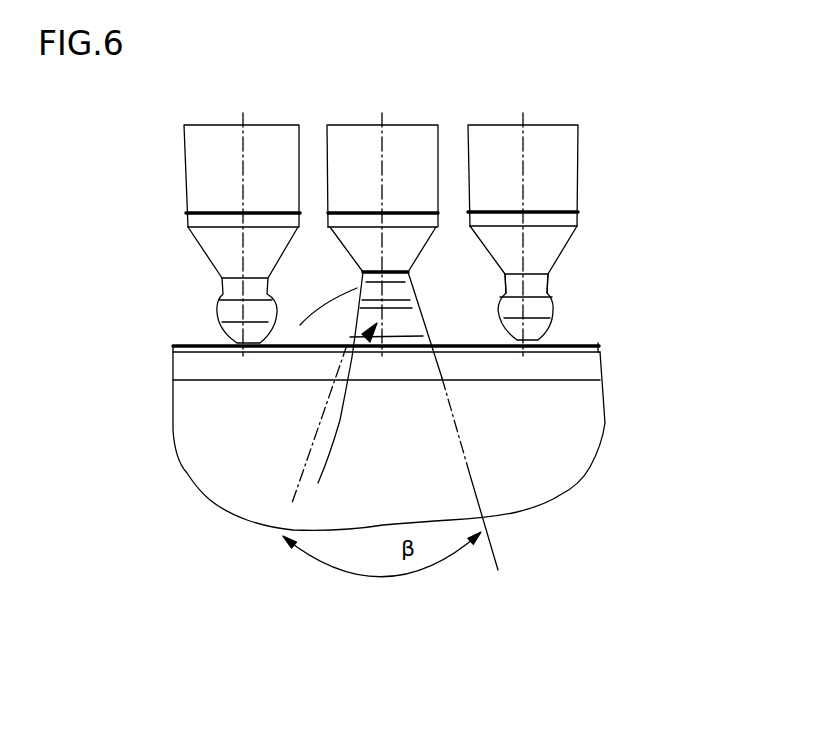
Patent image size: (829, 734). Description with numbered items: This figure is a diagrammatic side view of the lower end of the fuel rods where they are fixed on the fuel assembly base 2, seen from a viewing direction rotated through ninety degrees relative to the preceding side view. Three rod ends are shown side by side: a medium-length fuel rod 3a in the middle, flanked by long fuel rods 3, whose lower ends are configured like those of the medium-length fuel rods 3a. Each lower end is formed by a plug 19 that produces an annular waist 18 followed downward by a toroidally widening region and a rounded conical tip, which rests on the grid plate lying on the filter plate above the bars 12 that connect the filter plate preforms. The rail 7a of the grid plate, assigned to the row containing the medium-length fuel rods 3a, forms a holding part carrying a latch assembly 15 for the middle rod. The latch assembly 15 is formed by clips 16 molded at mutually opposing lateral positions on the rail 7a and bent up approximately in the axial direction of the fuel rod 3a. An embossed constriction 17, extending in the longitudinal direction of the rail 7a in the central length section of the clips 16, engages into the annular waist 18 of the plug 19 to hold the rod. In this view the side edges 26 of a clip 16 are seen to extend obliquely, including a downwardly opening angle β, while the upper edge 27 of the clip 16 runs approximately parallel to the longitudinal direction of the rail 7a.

The fuel assembly base 2 is at (573, 468).
The fuel rods 3 is at (205, 143).
The medium-length fuel rods 3a is at (342, 143).
The rail 7a is at (585, 335).
The bars 12 is at (567, 366).
The latch assembly 15 is at (278, 563).
The clips 16 is at (405, 320).
The constriction 17 is at (300, 325).
The annular waist 18 is at (553, 282).
The plug 19 is at (215, 245).
The side edges 26 is at (352, 310).
The upper edge 27 is at (393, 262).